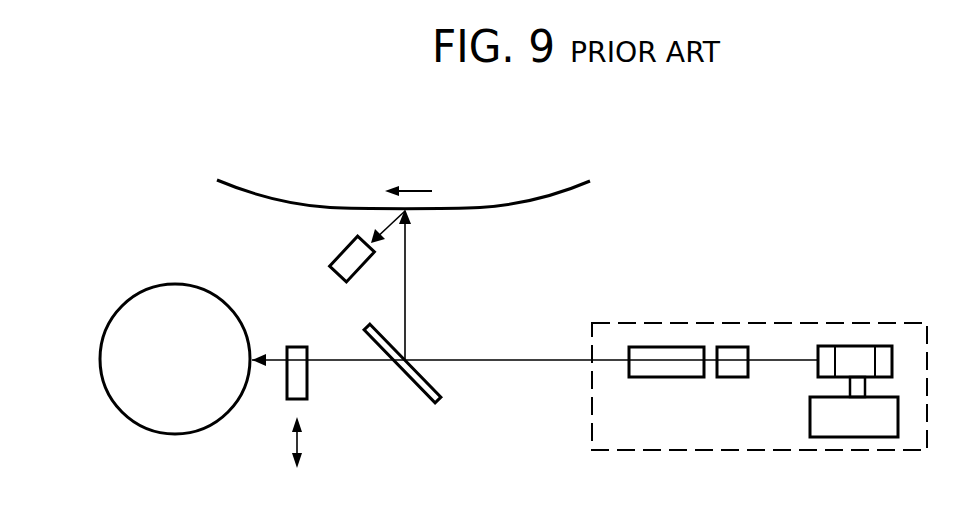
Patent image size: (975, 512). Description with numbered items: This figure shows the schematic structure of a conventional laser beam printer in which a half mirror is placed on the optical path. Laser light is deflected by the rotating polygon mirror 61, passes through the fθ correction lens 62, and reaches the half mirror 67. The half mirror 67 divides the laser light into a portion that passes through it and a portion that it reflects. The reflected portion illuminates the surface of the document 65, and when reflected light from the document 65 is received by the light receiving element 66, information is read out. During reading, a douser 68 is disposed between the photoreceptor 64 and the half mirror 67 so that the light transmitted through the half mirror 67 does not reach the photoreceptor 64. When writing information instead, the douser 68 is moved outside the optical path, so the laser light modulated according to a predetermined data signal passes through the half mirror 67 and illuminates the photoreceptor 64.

The rotating polygon mirror 61 is at (852, 345).
The fθ correction lens 62 is at (666, 346).
The photoreceptor 64 is at (143, 302).
The document 65 is at (332, 203).
The light receiving element 66 is at (331, 262).
The half mirror 67 is at (408, 376).
The douser 68 is at (302, 345).